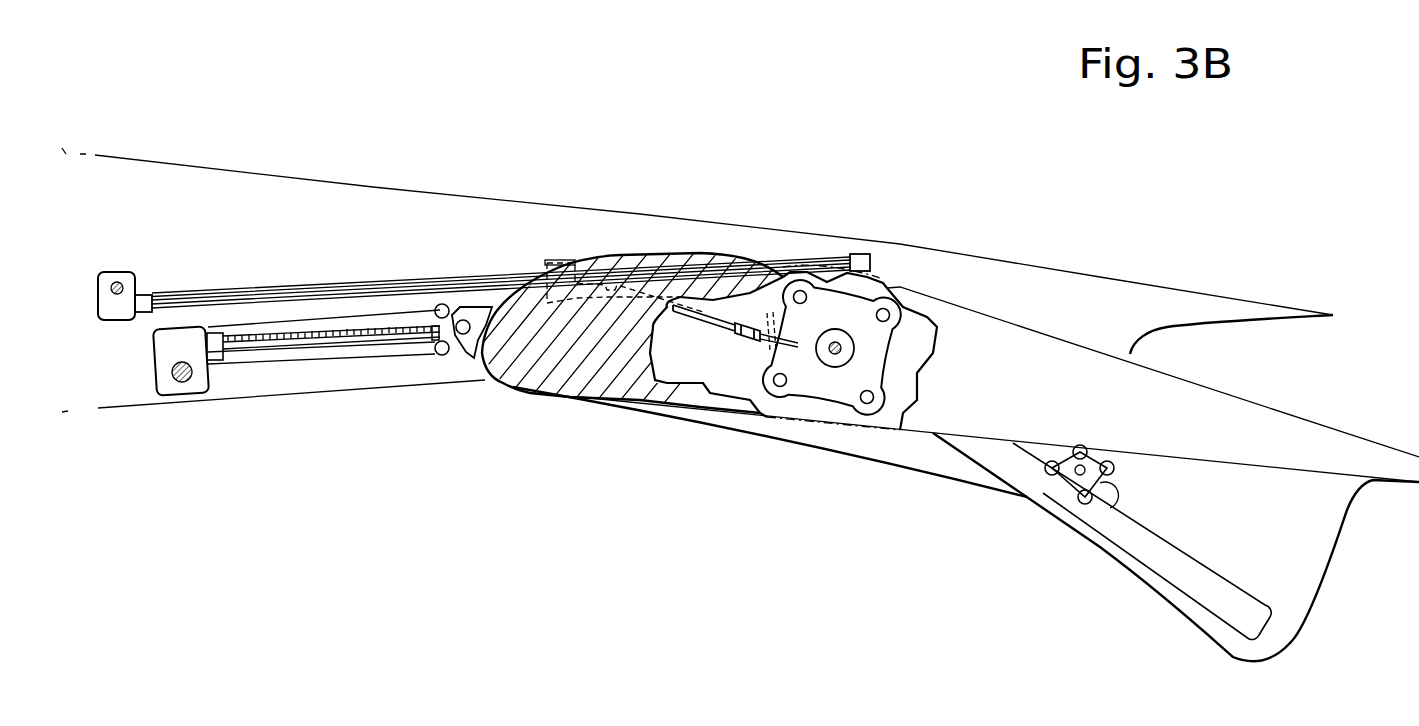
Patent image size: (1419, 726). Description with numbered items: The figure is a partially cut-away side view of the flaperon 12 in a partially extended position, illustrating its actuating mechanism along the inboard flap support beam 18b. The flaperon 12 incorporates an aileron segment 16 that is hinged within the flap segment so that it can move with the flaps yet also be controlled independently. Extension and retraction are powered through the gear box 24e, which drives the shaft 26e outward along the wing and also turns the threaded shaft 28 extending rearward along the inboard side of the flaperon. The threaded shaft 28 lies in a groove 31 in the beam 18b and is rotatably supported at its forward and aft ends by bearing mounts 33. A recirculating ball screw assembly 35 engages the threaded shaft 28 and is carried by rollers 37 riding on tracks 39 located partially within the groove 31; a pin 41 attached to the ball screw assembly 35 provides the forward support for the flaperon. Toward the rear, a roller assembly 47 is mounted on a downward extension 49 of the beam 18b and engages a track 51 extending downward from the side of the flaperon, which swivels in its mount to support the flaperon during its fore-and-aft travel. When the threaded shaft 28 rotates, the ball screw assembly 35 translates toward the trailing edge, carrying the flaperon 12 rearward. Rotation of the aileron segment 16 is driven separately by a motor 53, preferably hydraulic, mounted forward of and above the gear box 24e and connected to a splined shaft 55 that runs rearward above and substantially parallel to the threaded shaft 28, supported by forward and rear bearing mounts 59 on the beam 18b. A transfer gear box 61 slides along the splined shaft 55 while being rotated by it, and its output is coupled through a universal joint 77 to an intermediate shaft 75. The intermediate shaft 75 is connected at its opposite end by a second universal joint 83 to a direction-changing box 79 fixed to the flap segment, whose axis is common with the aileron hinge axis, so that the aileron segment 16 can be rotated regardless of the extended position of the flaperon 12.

The flaperon 12 is at (567, 155).
The aileron segment 16 is at (1076, 398).
The flap support beam 18b is at (372, 186).
The gear box 24e is at (190, 396).
The shaft 26e is at (172, 392).
The threaded shaft 28 is at (275, 350).
The groove 31 is at (307, 356).
The bearing mounts 33 is at (225, 363).
The recirculating ball screw assembly 35 is at (436, 376).
The rollers 37 is at (437, 304).
The tracks 39 is at (343, 355).
The pin 41 is at (463, 360).
The roller assembly 47 is at (1043, 507).
The downward extension 49 is at (918, 474).
The track 51 is at (1157, 562).
The motor 53 is at (118, 270).
The splined shaft 55 is at (244, 290).
The bearing mounts 59 is at (146, 293).
The transfer gear box 61 is at (547, 262).
The intermediate shaft 75 is at (683, 314).
The universal joint 77 is at (600, 284).
The direction-changing box 79 is at (917, 367).
The second universal joint 83 is at (741, 336).